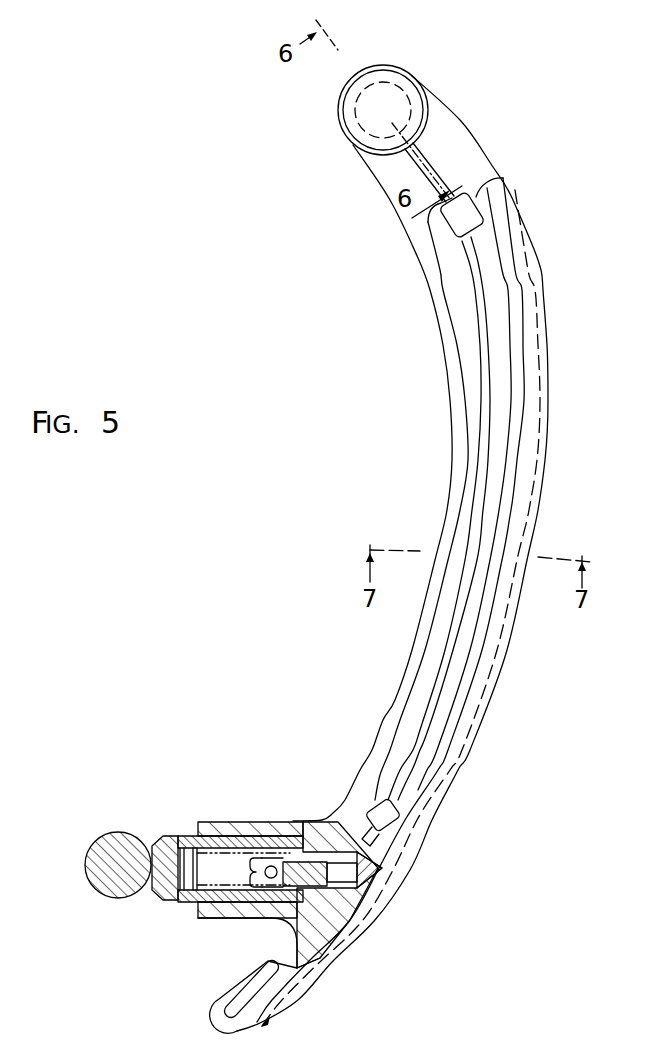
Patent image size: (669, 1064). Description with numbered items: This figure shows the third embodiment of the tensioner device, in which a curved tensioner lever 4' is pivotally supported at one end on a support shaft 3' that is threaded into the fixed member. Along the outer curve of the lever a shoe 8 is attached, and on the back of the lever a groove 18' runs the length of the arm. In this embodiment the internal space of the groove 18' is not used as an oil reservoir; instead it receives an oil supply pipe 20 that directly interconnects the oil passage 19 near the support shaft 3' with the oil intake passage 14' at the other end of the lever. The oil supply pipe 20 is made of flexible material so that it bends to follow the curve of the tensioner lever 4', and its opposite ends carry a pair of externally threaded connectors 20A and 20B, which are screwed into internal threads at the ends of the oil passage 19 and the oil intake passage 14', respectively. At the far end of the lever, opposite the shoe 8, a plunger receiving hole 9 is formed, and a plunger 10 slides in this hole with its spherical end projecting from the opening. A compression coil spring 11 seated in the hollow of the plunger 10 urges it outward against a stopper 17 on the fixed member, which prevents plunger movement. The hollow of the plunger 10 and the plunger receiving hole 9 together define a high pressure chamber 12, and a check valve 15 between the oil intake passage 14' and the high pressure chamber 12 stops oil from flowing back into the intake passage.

The support shaft 3' is at (391, 85).
The tensioner lever 4' is at (392, 538).
The oil passage 19 is at (446, 165).
The connector 20A is at (464, 210).
The oil supply pipe 20 is at (493, 382).
The groove 18' is at (434, 608).
The shoe 8 is at (497, 618).
The connector 20B is at (402, 810).
The oil intake passage 14' is at (412, 863).
The stopper 17 is at (104, 846).
The plunger 10 is at (170, 836).
The compression coil spring 11 is at (187, 836).
The high pressure chamber 12 is at (212, 884).
The check valve 15 is at (273, 868).
The plunger receiving hole 9 is at (343, 930).